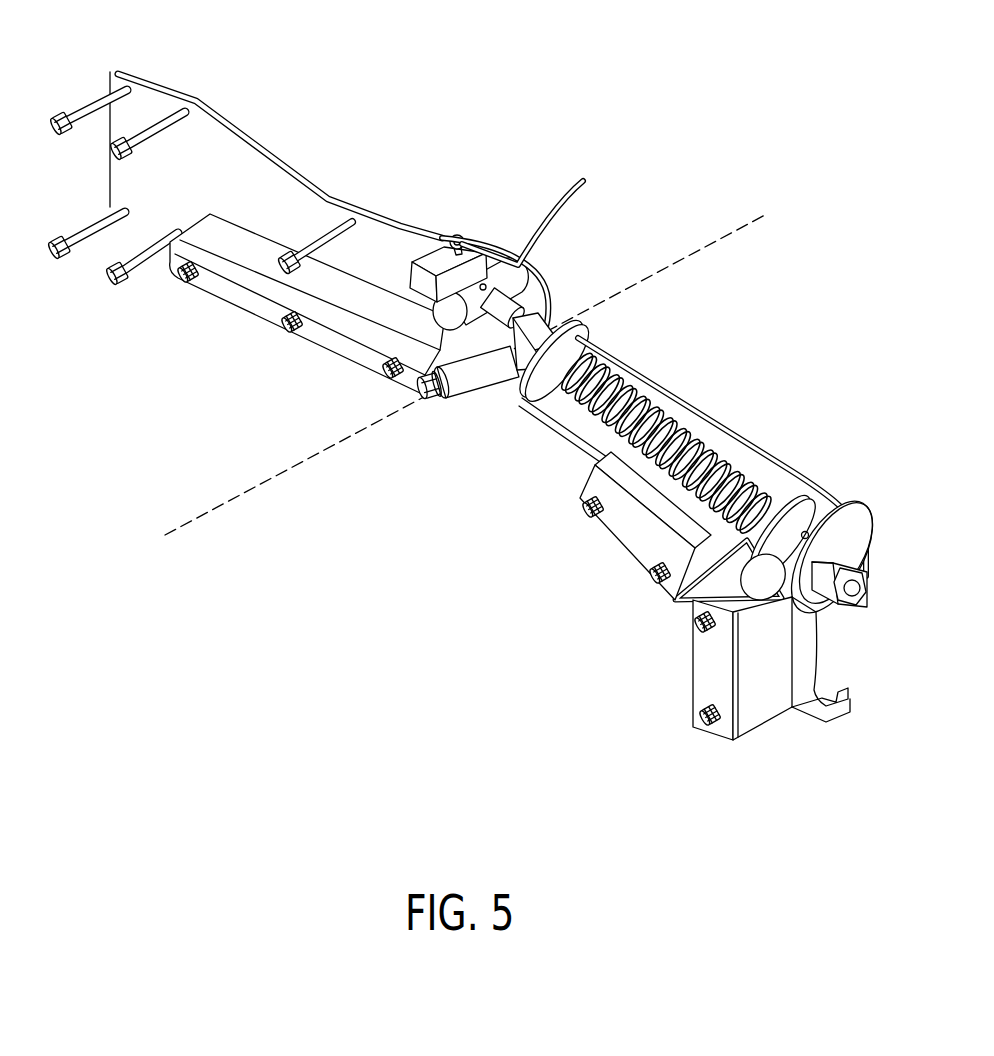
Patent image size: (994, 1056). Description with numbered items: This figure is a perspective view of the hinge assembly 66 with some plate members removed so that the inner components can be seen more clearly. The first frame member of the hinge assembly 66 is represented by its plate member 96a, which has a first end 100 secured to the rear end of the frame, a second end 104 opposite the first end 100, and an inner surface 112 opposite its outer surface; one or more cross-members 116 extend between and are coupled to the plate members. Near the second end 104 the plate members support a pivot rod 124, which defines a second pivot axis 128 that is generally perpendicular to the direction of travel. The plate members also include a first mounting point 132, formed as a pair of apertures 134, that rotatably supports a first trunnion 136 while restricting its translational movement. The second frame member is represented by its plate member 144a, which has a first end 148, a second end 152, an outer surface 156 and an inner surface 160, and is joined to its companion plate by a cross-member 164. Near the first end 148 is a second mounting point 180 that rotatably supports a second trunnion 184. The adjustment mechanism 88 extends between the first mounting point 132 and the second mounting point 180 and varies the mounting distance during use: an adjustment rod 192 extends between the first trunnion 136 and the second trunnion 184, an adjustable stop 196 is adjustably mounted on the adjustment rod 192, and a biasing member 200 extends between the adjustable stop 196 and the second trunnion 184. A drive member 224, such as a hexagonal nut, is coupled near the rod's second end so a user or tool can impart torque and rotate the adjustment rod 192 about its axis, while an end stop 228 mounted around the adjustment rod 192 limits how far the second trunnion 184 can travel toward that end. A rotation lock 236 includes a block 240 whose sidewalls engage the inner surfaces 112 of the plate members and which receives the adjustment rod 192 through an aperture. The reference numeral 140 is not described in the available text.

The hinge assembly 66 is at (542, 373).
The adjustment mechanism 88 is at (620, 328).
The plate member 96a is at (252, 163).
The first end 100 is at (233, 143).
The second end 104 is at (500, 254).
The inner surface 112 is at (146, 179).
The cross-member 116 is at (235, 288).
The pivot rod 124 is at (473, 378).
The second pivot axis 128 is at (210, 514).
The first mounting point 132 is at (527, 265).
The apertures 134 is at (514, 240).
The first trunnion 136 is at (491, 283).
The fasteners 140 is at (160, 117).
The plate member 144a is at (760, 472).
The first end 148 is at (485, 410).
The second end 152 is at (806, 614).
The outer surface 156 is at (722, 457).
The inner surface 160 is at (556, 452).
The cross-member 164 is at (703, 661).
The second mounting point 180 is at (842, 518).
The second trunnion 184 is at (808, 530).
The adjustment rod 192 is at (535, 315).
The adjustable stop 196 is at (518, 393).
The biasing member 200 is at (640, 398).
The drive member 224 is at (867, 580).
The end stop 228 is at (850, 547).
The rotation lock 236 is at (440, 258).
The block 240 is at (456, 235).